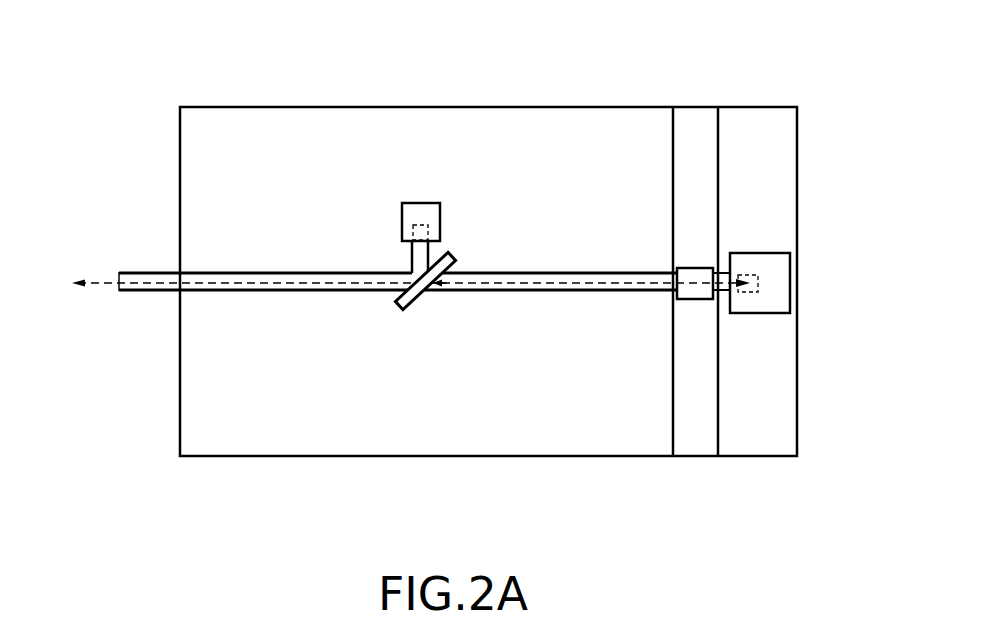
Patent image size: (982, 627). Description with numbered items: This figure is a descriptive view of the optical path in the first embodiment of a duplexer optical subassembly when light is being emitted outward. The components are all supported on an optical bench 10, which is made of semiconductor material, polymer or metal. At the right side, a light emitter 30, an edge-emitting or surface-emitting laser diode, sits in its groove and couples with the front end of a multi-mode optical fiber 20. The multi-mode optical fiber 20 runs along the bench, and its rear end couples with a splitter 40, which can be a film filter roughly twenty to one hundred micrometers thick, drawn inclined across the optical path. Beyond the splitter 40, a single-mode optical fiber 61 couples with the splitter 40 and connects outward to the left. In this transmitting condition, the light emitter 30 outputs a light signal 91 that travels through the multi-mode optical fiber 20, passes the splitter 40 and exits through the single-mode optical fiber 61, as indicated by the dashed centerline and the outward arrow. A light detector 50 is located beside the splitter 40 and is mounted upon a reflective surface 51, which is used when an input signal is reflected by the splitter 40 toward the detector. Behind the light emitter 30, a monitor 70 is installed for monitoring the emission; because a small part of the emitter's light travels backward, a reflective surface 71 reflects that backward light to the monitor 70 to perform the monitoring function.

The optical bench 10 is at (553, 106).
The multi-mode optical fiber 20 is at (562, 287).
The light emitter 30 is at (697, 292).
The splitter 40 is at (420, 300).
The light detector 50 is at (421, 230).
The reflective surface 51 is at (412, 230).
The single-mode optical fiber 61 is at (307, 287).
The monitor 70 is at (775, 282).
The reflective surface 71 is at (758, 275).
The light signal 91 is at (101, 283).